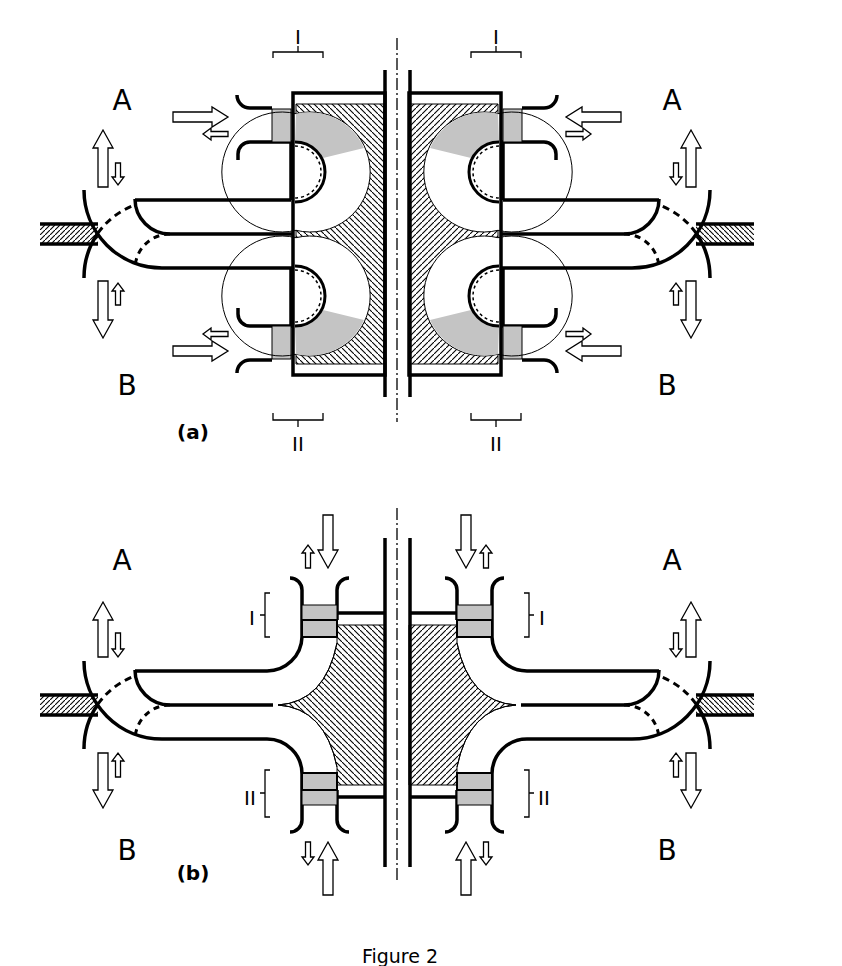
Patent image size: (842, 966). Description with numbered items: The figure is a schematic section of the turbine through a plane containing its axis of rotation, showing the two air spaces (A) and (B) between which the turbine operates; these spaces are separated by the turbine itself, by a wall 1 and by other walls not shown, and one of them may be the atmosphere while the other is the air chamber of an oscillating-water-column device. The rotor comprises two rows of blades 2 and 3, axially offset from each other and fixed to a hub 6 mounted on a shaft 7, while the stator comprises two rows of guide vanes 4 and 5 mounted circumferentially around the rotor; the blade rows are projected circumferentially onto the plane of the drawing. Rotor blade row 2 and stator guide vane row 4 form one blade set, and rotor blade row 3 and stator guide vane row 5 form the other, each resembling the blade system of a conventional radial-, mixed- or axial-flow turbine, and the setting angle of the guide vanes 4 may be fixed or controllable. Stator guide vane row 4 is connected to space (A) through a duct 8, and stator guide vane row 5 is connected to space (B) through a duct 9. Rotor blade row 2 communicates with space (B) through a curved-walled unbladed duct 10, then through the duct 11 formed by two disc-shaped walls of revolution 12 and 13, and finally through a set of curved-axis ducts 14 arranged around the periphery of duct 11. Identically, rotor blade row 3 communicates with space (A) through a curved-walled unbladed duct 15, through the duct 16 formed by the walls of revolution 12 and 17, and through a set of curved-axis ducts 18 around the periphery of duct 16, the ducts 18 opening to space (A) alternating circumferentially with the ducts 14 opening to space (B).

The wall 1 is at (60, 223).
The rotor blade row 2 is at (327, 137).
The rotor blade row 3 is at (327, 337).
The stator guide vane row 4 is at (283, 125).
The stator guide vane row 5 is at (283, 341).
The hub 6 is at (368, 124).
The shaft 7 is at (396, 86).
The duct 8 is at (258, 124).
The duct 9 is at (258, 343).
The curved-walled unbladed duct 10 is at (340, 189).
The duct 11 is at (236, 217).
The wall of revolution 12 is at (266, 232).
The wall of revolution 13 is at (203, 198).
The curved-axis ducts 14 is at (113, 268).
The curved-walled unbladed duct 15 is at (340, 281).
The duct 16 is at (235, 250).
The wall of revolution 17 is at (205, 271).
The curved-axis ducts 18 is at (114, 201).